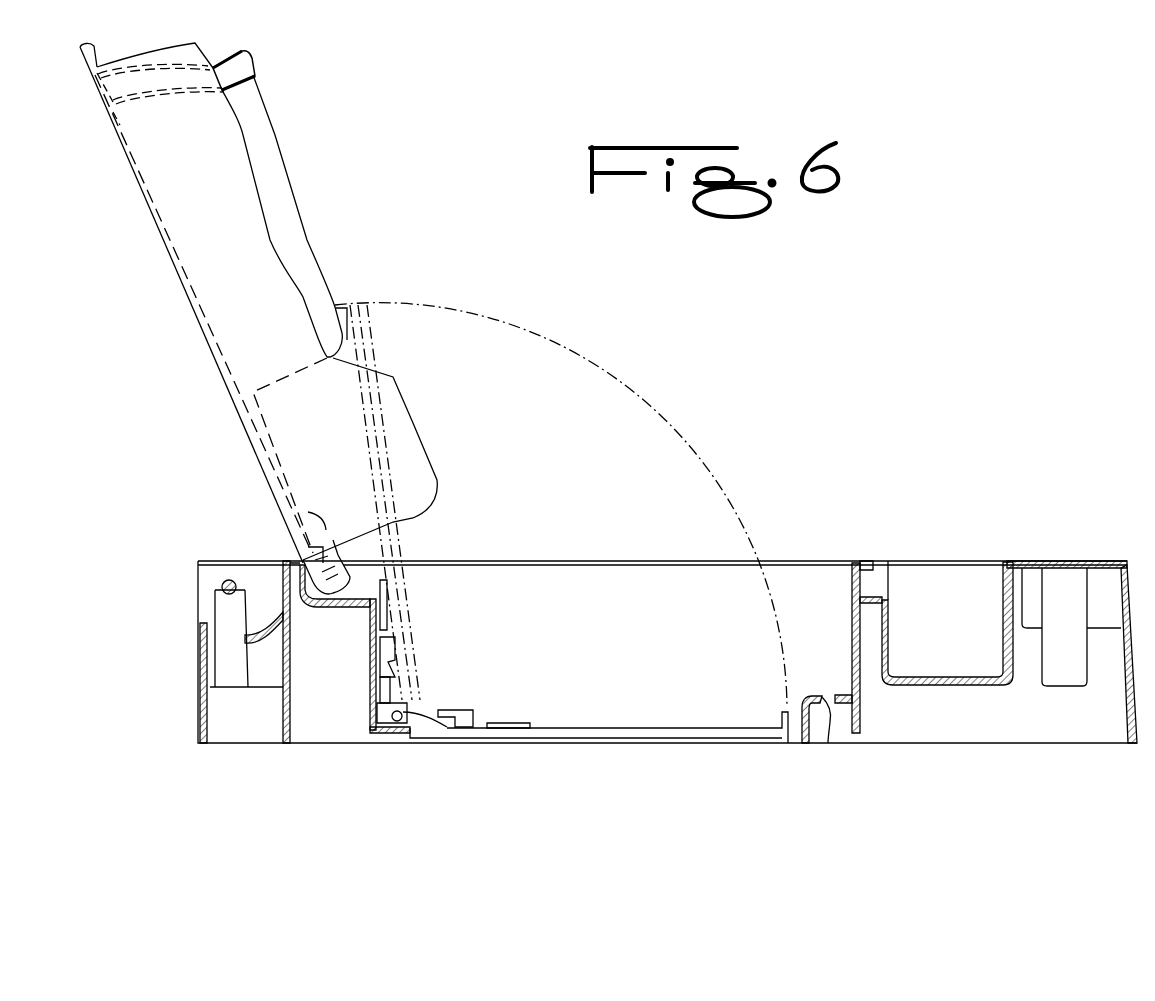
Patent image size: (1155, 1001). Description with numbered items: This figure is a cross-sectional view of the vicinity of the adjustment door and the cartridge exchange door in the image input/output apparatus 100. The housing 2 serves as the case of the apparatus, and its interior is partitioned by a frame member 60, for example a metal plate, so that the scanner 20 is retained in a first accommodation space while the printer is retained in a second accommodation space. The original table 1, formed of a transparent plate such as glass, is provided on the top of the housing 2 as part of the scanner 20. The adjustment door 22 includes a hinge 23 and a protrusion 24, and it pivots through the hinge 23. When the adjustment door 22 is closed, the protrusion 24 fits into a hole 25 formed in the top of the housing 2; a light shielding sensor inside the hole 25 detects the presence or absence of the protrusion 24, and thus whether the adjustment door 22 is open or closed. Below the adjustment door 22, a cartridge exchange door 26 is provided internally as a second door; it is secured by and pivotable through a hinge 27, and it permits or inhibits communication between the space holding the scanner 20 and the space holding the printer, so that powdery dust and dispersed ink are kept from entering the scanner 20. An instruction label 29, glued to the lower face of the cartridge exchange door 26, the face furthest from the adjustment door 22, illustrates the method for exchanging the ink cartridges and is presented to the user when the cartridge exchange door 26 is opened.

The original table 1 is at (798, 560).
The housing 2 is at (1027, 562).
The scanner 20 is at (1087, 562).
The adjustment door 22 is at (173, 266).
The hinge 23 is at (328, 605).
The protrusion 24 is at (222, 62).
The hole 25 is at (828, 743).
The cartridge exchange door 26 is at (640, 733).
The hinge 27 is at (398, 723).
The instruction label 29 is at (357, 360).
The frame member 60 is at (938, 745).
The image input/output apparatus 100 is at (940, 552).